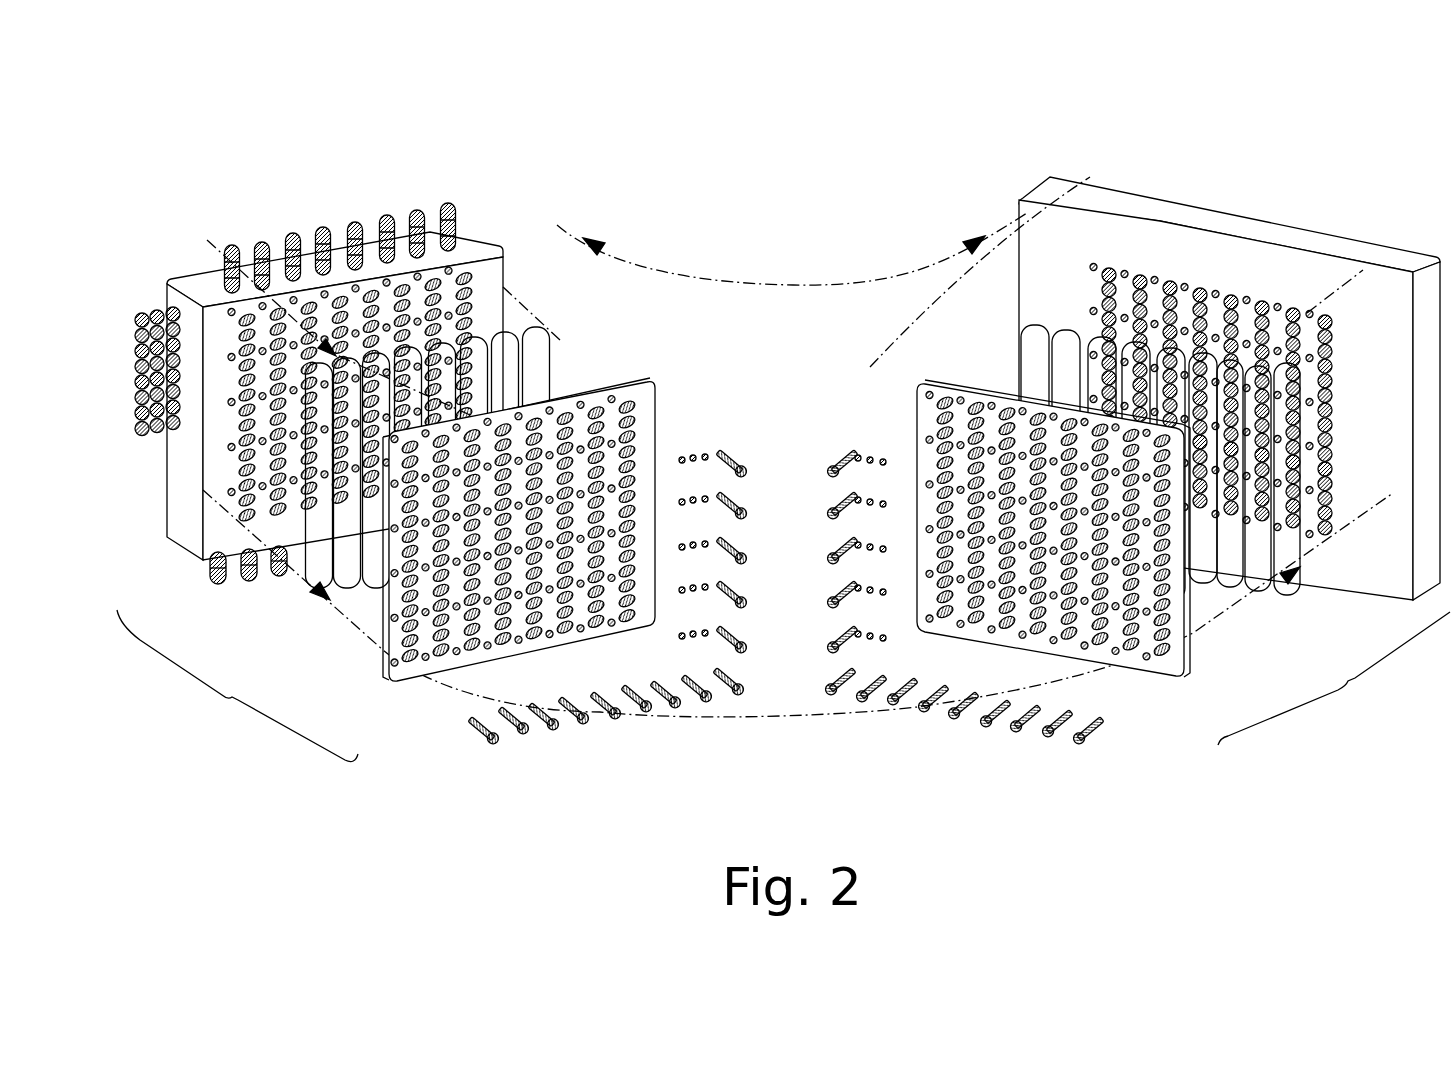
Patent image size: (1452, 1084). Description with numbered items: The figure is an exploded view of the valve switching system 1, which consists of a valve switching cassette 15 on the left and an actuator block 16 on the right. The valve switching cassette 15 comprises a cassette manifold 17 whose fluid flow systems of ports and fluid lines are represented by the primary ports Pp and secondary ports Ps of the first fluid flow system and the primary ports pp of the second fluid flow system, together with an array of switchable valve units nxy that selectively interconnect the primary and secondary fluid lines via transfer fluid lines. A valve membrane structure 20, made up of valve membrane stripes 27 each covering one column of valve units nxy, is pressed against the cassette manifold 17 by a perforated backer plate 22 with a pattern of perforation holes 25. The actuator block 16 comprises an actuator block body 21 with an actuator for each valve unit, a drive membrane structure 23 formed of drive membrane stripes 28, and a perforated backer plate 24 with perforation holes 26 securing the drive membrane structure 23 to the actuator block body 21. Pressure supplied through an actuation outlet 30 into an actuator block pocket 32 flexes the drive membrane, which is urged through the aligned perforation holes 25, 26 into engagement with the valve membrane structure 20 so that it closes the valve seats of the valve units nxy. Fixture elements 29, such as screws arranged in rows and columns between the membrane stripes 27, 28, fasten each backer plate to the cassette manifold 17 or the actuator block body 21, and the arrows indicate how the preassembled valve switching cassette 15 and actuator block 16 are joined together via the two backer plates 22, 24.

The valve switching system 1 is at (228, 137).
The valve switching cassette 15 is at (237, 686).
The actuator block 16 is at (1334, 678).
The cassette manifold 17 is at (195, 268).
The valve membrane structure 20 is at (705, 285).
The actuator block body 21 is at (1020, 197).
The perforated backer plate 22 is at (380, 645).
The drive membrane structure 23 is at (912, 263).
The perforated backer plate 24 is at (1193, 673).
The perforation holes 25 is at (527, 615).
The perforation holes 26 is at (1033, 613).
The valve membrane stripes 27 is at (505, 357).
The drive membrane stripes 28 is at (1045, 358).
The fixture elements 29 is at (827, 505).
The actuation outlet 30 is at (1270, 312).
The actuator block pocket 32 is at (1140, 277).
The secondary ports Ps is at (475, 180).
The primary ports Pp is at (122, 385).
The primary ports pp is at (275, 565).
The switchable valve units nxy is at (437, 280).